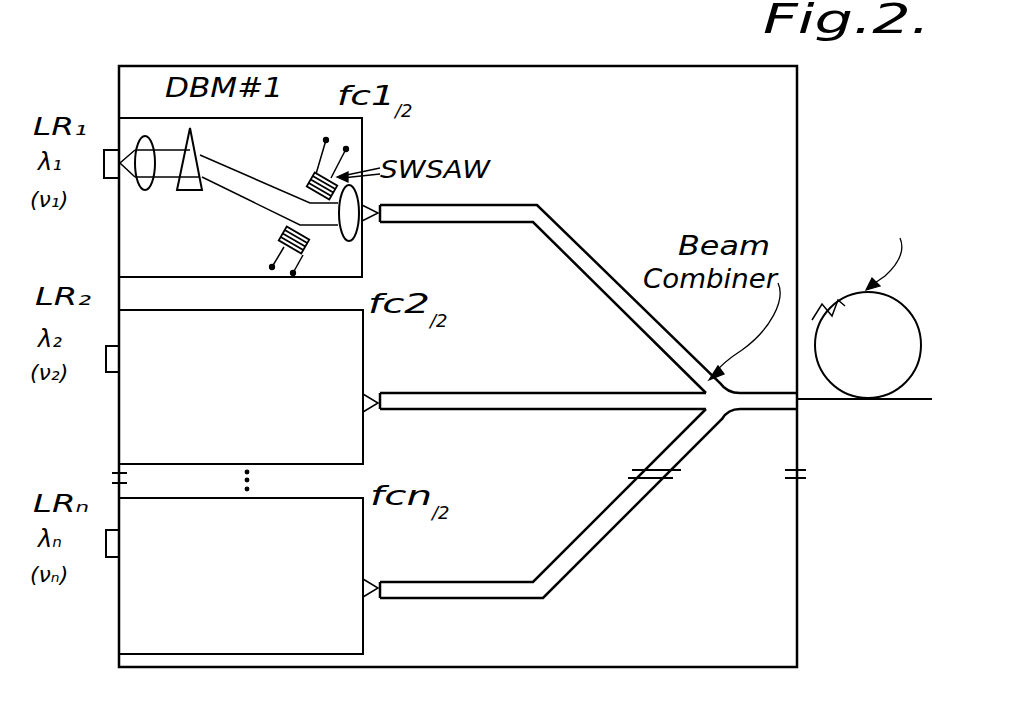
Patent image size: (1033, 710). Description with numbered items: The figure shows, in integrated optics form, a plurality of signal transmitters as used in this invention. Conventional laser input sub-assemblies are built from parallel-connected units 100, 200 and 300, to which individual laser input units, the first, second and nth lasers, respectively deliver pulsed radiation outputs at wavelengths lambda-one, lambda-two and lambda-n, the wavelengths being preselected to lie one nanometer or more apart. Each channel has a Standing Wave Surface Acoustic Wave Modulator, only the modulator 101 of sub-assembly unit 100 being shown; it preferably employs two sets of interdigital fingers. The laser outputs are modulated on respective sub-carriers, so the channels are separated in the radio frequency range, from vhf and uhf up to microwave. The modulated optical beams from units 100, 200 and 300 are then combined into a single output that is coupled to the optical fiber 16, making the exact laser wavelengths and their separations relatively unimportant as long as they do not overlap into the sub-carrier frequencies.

The laser input sub-assembly unit 100 is at (268, 137).
The Standing Wave Surface Acoustic Wave Modulator 101 is at (314, 249).
The laser input sub-assembly unit 200 is at (238, 325).
The laser input sub-assembly unit 300 is at (252, 515).
The optical fiber 16 is at (882, 323).